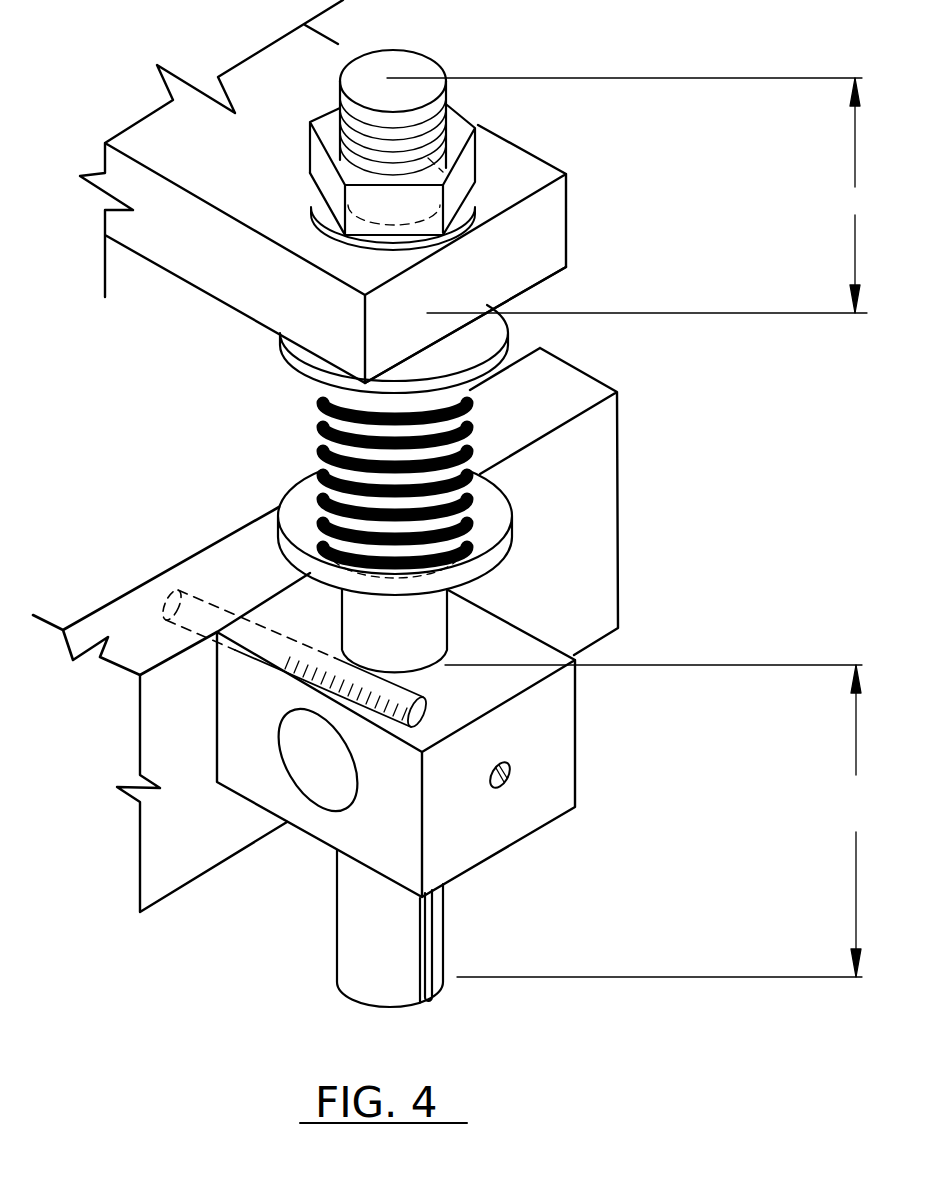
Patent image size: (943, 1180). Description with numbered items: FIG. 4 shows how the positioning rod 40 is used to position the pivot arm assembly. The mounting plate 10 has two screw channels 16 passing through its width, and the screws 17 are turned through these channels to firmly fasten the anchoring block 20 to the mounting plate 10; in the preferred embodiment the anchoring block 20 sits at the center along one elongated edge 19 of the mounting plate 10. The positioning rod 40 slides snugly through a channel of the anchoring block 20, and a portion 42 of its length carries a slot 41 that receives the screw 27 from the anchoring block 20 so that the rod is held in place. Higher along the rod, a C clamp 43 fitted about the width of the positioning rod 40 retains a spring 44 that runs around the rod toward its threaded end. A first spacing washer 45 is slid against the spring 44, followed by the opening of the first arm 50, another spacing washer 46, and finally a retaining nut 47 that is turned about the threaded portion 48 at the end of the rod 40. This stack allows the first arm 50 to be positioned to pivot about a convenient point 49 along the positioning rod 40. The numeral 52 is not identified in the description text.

The mounting plate 10 is at (163, 903).
The screw channels 16 is at (277, 620).
The screws 17 is at (392, 698).
The elongated edge 19 is at (250, 517).
The anchoring block 20 is at (498, 853).
The screw 27 is at (503, 787).
The positioning rod 40 is at (448, 625).
The slot 41 is at (420, 999).
The portion 42 is at (656, 821).
The C clamp 43 is at (463, 540).
The spring 44 is at (322, 447).
The first spacing washer 45 is at (280, 350).
The spacing washer 46 is at (478, 207).
The retaining nut 47 is at (478, 137).
The threaded portion 48 is at (629, 195).
The pivot point 49 is at (440, 280).
The first arm 50 is at (570, 217).
The plate opening 52 is at (336, 192).